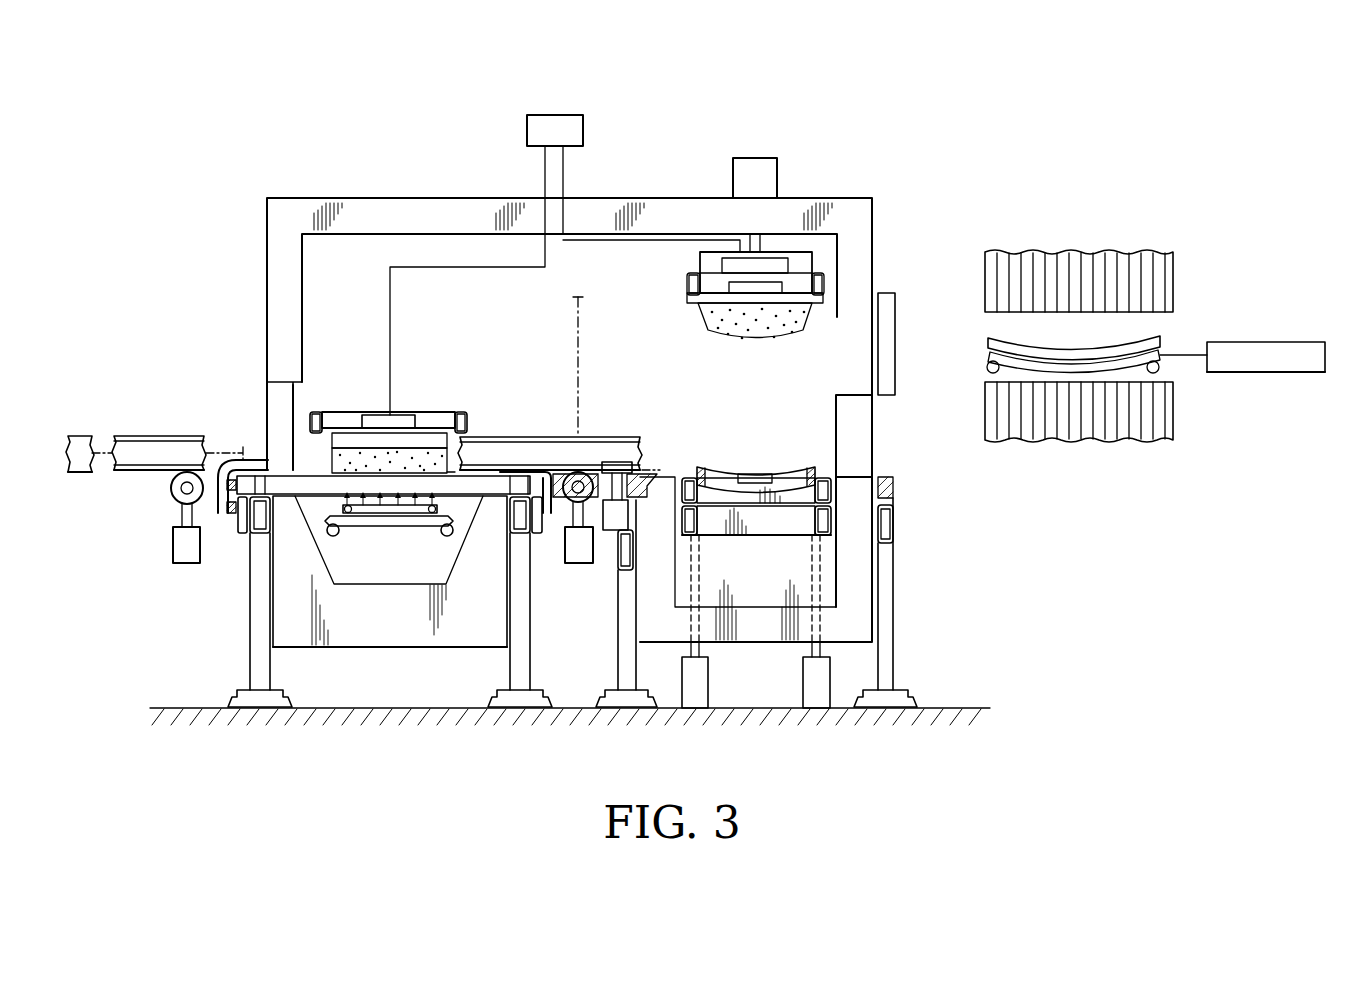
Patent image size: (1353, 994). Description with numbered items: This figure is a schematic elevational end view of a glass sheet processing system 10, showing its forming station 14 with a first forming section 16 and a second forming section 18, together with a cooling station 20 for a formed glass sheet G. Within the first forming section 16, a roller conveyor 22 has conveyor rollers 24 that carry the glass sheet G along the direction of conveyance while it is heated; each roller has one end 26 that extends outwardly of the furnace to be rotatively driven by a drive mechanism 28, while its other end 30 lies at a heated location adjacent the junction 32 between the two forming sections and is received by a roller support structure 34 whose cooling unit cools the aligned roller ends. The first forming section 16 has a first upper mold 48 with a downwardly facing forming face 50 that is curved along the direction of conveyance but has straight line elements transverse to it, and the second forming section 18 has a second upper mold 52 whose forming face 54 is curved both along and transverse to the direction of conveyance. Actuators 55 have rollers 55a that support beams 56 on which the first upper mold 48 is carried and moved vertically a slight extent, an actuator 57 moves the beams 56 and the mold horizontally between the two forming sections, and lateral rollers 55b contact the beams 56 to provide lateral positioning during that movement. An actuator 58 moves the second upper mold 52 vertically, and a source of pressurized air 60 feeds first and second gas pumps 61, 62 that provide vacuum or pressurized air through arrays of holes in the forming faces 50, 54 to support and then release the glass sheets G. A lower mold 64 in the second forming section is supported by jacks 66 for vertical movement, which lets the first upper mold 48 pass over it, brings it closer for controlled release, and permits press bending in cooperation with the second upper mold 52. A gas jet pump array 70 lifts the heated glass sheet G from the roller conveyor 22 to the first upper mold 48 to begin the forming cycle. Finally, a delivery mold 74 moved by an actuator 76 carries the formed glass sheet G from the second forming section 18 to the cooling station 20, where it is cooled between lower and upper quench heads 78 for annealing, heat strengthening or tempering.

The glass sheet processing system 10 is at (735, 72).
The forming station 14 is at (623, 182).
The first forming section 16 is at (453, 185).
The second forming section 18 is at (851, 142).
The cooling station 20 is at (1113, 228).
The roller conveyor 22 is at (322, 447).
The conveyor rollers 24 is at (288, 458).
The roller end 26 is at (247, 505).
The drive mechanism 28 is at (222, 527).
The roller end 30 is at (503, 476).
The junction 32 is at (583, 315).
The roller support structure 34 is at (553, 437).
The first upper mold 48 is at (292, 456).
The forming face 50 is at (406, 450).
The second upper mold 52 is at (697, 318).
The forming face 54 is at (755, 333).
The actuators 55 is at (168, 546).
The rollers 55a is at (170, 488).
The lateral rollers 55b is at (553, 455).
The beams 56 is at (136, 436).
The actuator 57 is at (78, 436).
The actuator 58 is at (757, 158).
The source of pressurized air 60 is at (553, 115).
The first gas pump 61 is at (378, 415).
The second gas pump 62 is at (775, 268).
The lower mold 64 is at (694, 466).
The jacks 66 is at (798, 662).
The gas jet pump array 70 is at (325, 509).
The delivery mold 74 is at (1160, 350).
The actuator 76 is at (1265, 342).
The quench heads 78 is at (1176, 282).
The glass sheet G is at (486, 470).